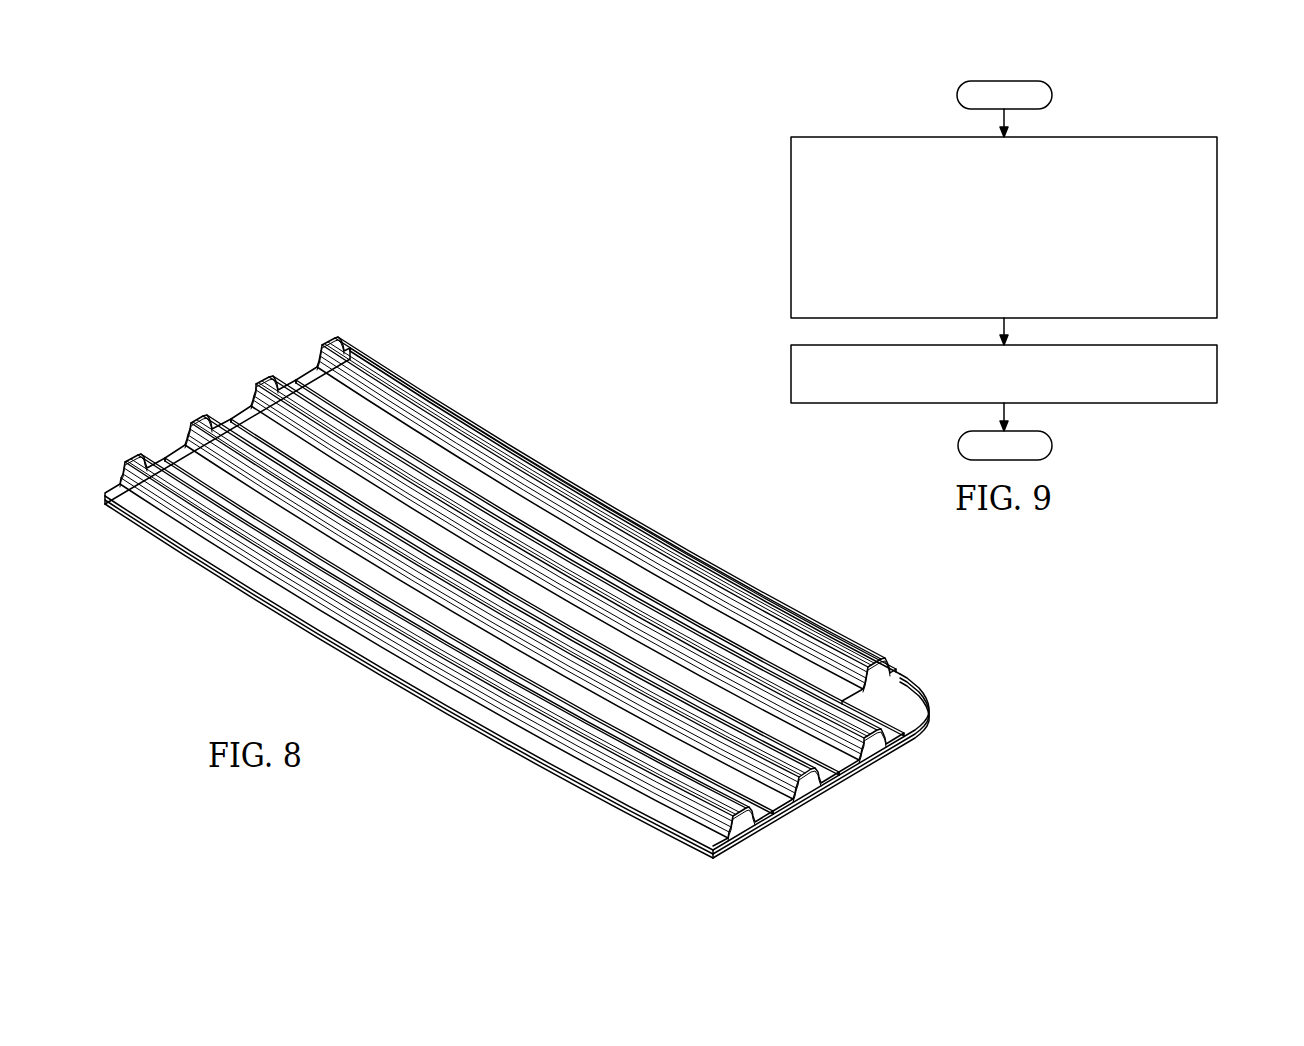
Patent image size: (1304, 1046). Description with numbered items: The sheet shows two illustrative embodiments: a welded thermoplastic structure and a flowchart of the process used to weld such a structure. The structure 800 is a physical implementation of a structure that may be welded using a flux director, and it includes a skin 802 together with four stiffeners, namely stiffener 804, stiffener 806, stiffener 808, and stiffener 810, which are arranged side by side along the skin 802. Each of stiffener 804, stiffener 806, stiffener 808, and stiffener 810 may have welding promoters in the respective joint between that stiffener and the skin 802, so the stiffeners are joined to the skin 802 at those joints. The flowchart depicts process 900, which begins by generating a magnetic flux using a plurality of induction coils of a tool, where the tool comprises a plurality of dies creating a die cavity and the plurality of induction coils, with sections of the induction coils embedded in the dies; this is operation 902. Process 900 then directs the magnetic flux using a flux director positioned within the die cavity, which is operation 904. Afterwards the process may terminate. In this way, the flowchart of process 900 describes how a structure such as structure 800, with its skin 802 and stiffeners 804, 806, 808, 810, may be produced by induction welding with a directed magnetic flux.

In FIG. 8, the structure 800 is at (955, 676).
In FIG. 8, the skin 802 is at (400, 681).
In FIG. 8, the stiffener 804 is at (124, 463).
In FIG. 8, the stiffener 806 is at (189, 425).
In FIG. 8, the stiffener 808 is at (254, 387).
In FIG. 8, the stiffener 810 is at (321, 346).
In FIG. 9, the process 900 is at (1146, 117).
In FIG. 9, the operation 902 is at (1218, 222).
In FIG. 9, the operation 904 is at (1218, 378).